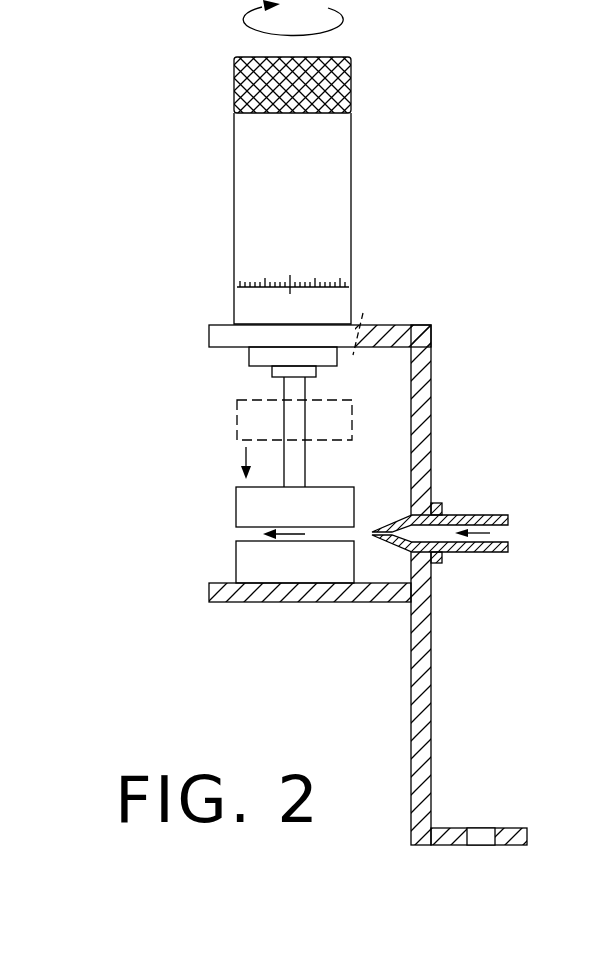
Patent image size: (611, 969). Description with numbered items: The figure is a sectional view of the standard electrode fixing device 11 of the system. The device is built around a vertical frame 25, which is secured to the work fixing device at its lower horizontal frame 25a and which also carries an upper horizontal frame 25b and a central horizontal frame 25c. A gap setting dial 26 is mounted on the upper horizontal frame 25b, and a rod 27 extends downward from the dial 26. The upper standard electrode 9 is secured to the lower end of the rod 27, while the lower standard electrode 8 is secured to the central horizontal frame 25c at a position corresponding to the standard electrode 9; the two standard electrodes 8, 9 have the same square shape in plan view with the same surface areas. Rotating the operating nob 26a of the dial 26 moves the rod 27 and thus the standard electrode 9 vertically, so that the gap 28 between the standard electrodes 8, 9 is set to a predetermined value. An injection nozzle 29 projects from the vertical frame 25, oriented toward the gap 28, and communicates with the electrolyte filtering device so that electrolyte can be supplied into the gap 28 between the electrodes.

The standard electrode fixing device 11 is at (200, 157).
The gap setting dial 26 is at (352, 202).
The operating nob 26a is at (397, 88).
The vertical frame 25 is at (413, 683).
The lower horizontal frame 25a is at (507, 833).
The upper horizontal frame 25b is at (378, 333).
The central horizontal frame 25c is at (298, 594).
The rod 27 is at (287, 388).
The standard electrode 9 is at (243, 500).
The standard electrode 8 is at (235, 561).
The gap 28 is at (243, 533).
The injection nozzle 29 is at (433, 507).